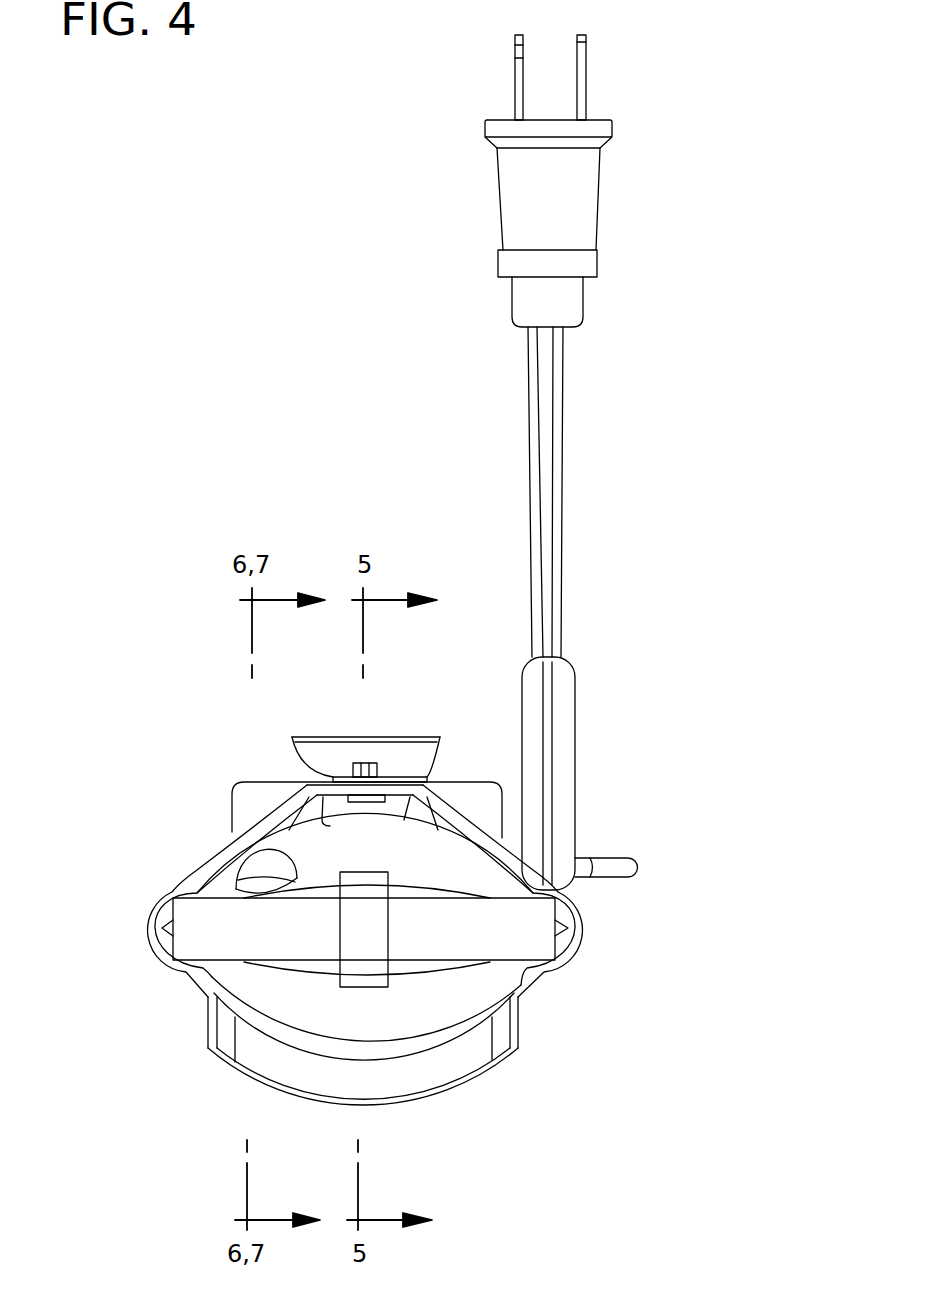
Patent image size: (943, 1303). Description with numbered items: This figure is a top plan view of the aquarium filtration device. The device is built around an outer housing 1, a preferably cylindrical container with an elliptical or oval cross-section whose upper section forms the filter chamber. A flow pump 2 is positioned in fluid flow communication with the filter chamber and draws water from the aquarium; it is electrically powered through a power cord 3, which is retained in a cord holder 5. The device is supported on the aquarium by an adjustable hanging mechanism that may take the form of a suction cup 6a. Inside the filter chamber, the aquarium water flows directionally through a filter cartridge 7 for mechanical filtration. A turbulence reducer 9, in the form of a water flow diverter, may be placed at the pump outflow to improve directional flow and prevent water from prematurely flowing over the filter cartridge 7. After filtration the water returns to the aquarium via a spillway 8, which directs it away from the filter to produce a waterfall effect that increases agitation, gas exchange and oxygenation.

The outer housing 1 is at (188, 970).
The flow pump 2 is at (270, 785).
The power cord 3 is at (567, 373).
The cord holder 5 is at (570, 742).
The suction cup 6a is at (392, 752).
The filter cartridge 7 is at (517, 940).
The spillway 8 is at (450, 1075).
The turbulence reducer 9 is at (273, 860).